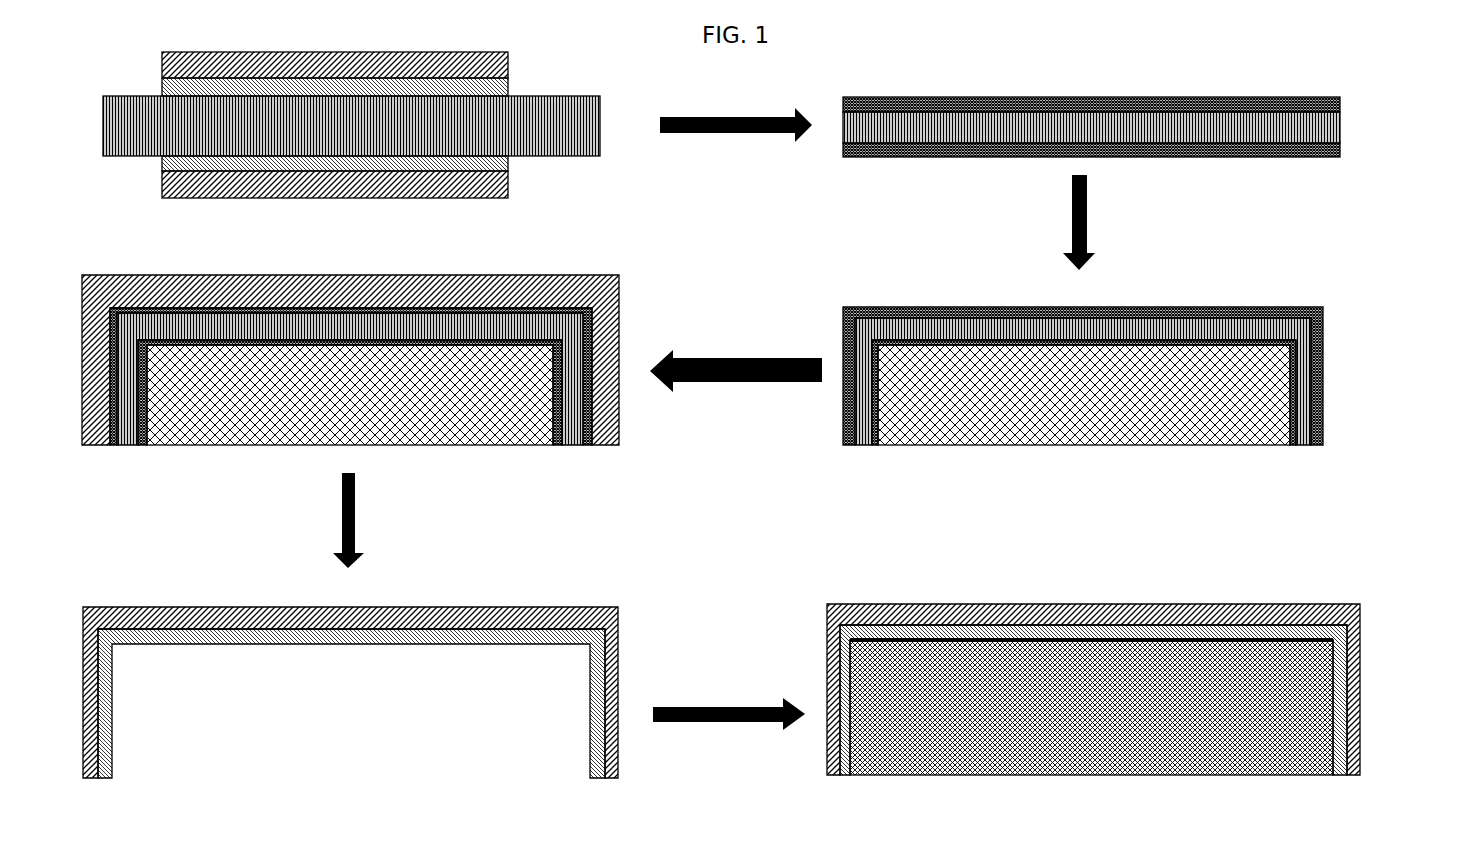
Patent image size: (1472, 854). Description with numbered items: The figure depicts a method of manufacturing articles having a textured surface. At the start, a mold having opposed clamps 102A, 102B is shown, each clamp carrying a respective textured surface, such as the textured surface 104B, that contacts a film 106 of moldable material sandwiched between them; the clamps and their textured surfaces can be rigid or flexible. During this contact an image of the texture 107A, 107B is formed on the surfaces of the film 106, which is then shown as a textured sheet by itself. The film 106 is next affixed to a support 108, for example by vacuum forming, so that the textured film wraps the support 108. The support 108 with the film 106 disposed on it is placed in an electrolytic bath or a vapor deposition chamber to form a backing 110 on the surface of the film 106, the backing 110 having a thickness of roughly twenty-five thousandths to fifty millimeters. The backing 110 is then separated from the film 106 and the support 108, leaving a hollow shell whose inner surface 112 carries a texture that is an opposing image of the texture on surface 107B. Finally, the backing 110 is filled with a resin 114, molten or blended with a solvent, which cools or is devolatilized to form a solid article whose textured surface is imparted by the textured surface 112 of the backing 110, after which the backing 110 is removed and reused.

The clamp 102A is at (508, 187).
The clamp 102B is at (508, 53).
The textured surface 104B is at (510, 84).
The film 106 is at (1378, 52).
The image of the texture 107A is at (1277, 158).
The image of the texture 107B is at (1157, 96).
The support 108 is at (718, 395).
The backing 110 is at (598, 276).
The textured surface of the backing 112 is at (607, 675).
The resin 114 is at (1091, 707).